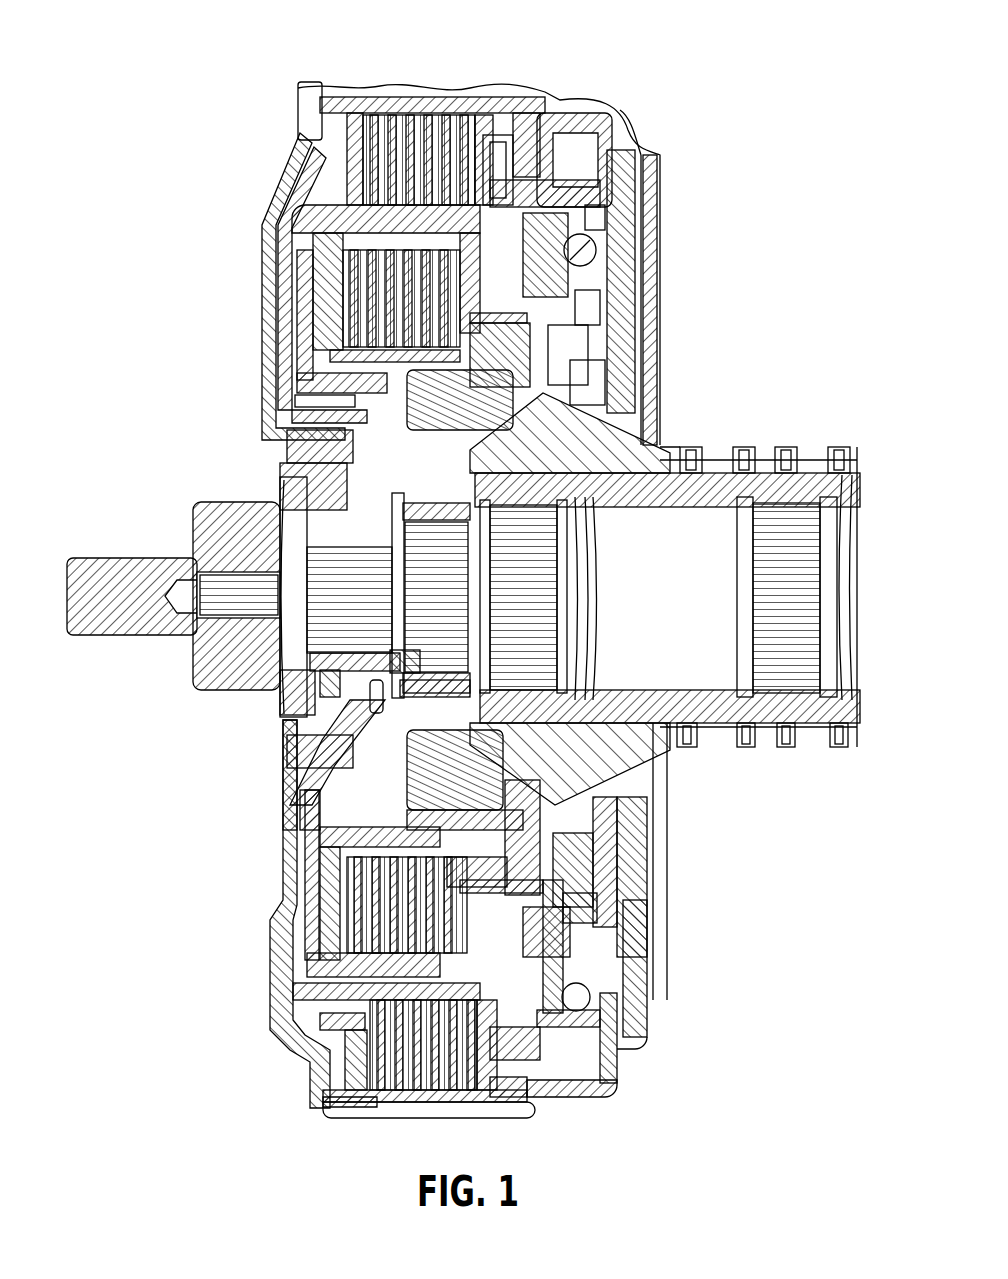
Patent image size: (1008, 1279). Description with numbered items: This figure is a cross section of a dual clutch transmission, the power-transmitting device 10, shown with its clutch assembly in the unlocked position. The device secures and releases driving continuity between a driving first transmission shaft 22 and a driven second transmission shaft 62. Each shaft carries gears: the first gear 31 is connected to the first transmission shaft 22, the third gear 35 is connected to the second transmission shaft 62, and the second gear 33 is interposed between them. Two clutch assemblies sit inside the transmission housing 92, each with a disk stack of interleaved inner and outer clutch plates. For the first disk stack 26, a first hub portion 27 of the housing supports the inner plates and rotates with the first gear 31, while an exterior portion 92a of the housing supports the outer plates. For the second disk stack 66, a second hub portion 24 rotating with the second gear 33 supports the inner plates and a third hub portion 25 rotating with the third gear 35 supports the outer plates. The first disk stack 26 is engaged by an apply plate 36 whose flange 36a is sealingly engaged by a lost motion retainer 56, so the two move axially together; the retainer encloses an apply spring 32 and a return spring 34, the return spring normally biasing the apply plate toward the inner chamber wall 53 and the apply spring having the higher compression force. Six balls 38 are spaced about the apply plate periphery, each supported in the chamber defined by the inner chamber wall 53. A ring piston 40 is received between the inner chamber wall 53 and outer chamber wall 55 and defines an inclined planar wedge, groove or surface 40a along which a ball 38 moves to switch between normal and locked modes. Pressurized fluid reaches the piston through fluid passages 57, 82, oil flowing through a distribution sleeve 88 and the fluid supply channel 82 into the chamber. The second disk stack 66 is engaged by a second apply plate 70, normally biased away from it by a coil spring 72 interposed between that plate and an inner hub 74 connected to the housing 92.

The power-transmitting device 10 is at (624, 94).
The first transmission shaft 22 is at (230, 653).
The second hub portion 24 is at (330, 410).
The third hub portion 25 is at (347, 290).
The first disk stack 26 is at (365, 147).
The first hub portion 27 is at (300, 207).
The first gear 31 is at (335, 640).
The apply spring 32 is at (583, 177).
The second gear 33 is at (335, 715).
The return spring 34 is at (596, 252).
The third gear 35 is at (645, 712).
The apply plate 36 is at (625, 170).
The flange 36a is at (527, 115).
The ball 38 is at (598, 320).
The piston 40 is at (636, 272).
The inclined planar wedge, groove or surface 40a is at (600, 300).
The inner chamber wall 53 is at (590, 238).
The outer chamber wall 55 is at (650, 340).
The lost motion retainer 56 is at (560, 125).
The fluid passage 57 is at (613, 207).
The second transmission shaft 62 is at (676, 655).
The second disk stack 66 is at (347, 327).
The second apply plate 70 is at (400, 440).
The coil spring 72 is at (640, 430).
The inner hub 74 is at (360, 370).
The fluid supply channel 82 is at (630, 370).
The distribution sleeve 88 is at (803, 727).
The transmission housing 92 is at (292, 165).
The exterior portion 92a is at (383, 97).